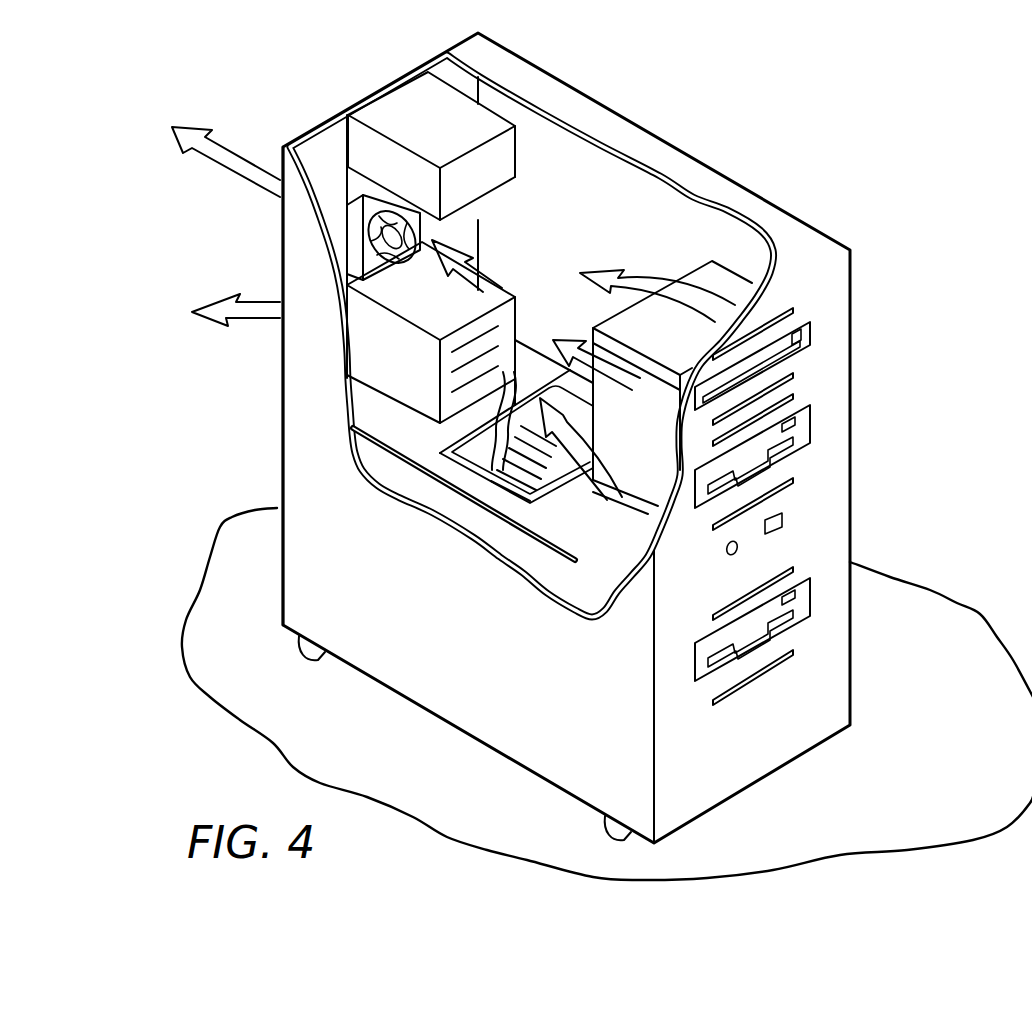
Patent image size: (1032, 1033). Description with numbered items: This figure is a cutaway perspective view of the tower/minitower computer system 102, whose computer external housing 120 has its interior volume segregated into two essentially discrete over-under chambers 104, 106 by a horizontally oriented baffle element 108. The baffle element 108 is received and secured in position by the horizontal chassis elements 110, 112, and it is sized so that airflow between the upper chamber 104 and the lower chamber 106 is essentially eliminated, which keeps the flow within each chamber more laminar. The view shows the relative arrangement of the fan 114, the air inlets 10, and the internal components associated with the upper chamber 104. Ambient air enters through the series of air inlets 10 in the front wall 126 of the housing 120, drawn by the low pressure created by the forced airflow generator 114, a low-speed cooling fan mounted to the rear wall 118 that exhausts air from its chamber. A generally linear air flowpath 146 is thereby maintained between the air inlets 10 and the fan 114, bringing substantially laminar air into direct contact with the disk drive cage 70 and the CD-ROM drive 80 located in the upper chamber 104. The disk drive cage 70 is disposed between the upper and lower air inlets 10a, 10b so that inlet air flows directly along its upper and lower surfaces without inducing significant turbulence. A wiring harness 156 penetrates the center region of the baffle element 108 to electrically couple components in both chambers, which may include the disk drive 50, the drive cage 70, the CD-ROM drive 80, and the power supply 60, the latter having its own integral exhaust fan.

The air inlets 10 is at (790, 310).
The upper air inlet 10a is at (790, 398).
The lower air inlet 10b is at (790, 475).
The disk drive 50 is at (810, 602).
The power supply 60 is at (370, 345).
The disk drive cage 70 is at (810, 427).
The CD-ROM drive 80 is at (810, 338).
The tower/minitower computer system 102 is at (790, 147).
The upper chamber 104 is at (590, 193).
The lower chamber 106 is at (410, 486).
The baffle element 108 is at (513, 490).
The horizontal chassis element 110 is at (380, 448).
The horizontal chassis element 112 is at (560, 537).
The forced airflow generator (cooling fan) 114 is at (353, 238).
The rear wall 118 is at (433, 57).
The computer external housing 120 is at (793, 213).
The front wall 126 is at (827, 530).
The air flowpath 146 is at (450, 253).
The wiring harness 156 is at (478, 468).